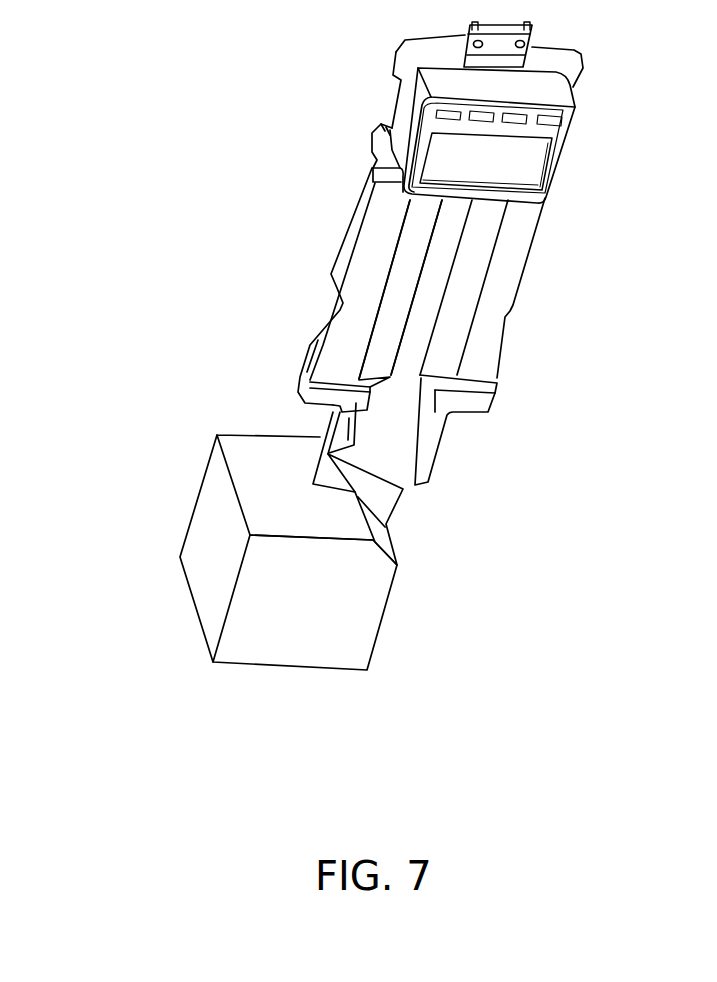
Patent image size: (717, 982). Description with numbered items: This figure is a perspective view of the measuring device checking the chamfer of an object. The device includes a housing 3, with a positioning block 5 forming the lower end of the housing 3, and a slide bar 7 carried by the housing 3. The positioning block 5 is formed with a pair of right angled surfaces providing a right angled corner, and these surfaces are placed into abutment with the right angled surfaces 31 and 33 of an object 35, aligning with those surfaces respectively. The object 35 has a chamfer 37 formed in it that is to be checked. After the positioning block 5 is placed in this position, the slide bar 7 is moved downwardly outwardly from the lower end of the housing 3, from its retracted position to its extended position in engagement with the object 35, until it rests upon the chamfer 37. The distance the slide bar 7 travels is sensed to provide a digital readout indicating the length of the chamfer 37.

The housing 3 is at (547, 247).
The positioning block 5 is at (463, 415).
The slide bar 7 is at (430, 308).
The right angled surface 31 is at (265, 458).
The right angled surface 33 is at (390, 610).
The object 35 is at (278, 518).
The chamfer 37 is at (379, 532).